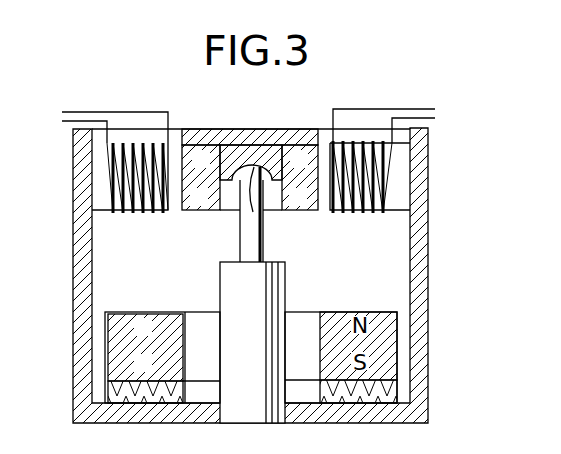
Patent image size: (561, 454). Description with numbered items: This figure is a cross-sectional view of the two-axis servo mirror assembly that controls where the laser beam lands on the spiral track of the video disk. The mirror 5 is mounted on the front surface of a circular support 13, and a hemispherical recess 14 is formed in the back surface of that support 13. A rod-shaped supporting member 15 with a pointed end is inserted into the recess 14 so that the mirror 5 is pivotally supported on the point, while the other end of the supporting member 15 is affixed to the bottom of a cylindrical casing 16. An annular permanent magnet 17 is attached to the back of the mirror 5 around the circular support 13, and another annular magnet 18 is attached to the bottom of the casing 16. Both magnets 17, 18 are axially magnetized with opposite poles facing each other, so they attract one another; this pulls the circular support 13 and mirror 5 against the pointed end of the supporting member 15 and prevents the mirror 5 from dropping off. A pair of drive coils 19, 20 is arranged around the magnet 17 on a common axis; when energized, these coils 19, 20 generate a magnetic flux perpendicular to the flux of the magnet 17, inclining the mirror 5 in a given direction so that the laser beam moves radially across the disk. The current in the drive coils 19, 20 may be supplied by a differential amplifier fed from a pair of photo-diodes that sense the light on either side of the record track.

The two-axis servo mirror 5 is at (239, 143).
The circular support 13 is at (270, 142).
The hemispherical recess 14 is at (262, 214).
The supporting member 15 is at (242, 232).
The cylindrical casing 16 is at (420, 232).
The annular permanent magnet 17 is at (201, 142).
The annular magnet 18 is at (115, 341).
The drive coil 19 is at (133, 165).
The drive coil 20 is at (362, 153).